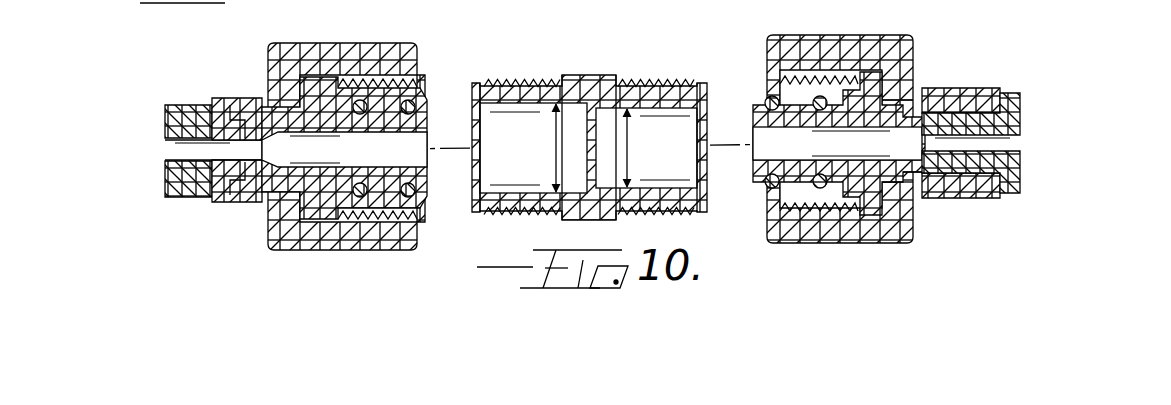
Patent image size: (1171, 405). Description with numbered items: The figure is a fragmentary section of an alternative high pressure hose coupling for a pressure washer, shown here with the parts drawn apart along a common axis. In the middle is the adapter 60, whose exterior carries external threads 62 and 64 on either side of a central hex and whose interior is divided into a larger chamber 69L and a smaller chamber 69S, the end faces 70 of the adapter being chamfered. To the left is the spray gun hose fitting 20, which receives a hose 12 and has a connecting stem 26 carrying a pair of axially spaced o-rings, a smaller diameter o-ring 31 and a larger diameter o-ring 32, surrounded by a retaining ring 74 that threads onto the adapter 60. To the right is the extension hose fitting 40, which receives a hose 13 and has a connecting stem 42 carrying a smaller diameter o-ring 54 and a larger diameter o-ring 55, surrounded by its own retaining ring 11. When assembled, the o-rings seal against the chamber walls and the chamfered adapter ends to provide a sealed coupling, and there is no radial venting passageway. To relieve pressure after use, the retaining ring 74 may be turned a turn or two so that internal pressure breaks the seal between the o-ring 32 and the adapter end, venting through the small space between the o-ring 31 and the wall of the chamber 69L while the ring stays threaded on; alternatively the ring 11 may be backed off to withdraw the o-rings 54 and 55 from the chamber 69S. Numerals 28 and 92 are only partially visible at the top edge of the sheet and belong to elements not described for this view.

The nut 11 is at (861, 42).
The tube 12 is at (165, 178).
The tube 13 is at (1022, 114).
The spray gun hose fitting 20 is at (277, 108).
The connecting stem 26 is at (295, 180).
The component (partially shown) 28 is at (365, 6).
The smaller diameter o-ring 31 is at (412, 197).
The larger diameter o-ring 32 is at (362, 197).
The extension hose fitting 40 is at (912, 96).
The connecting stem 42 is at (893, 185).
The smaller diameter o-ring 54 is at (768, 99).
The larger diameter o-ring 55 is at (820, 190).
The adapter 60 is at (593, 124).
The external thread 62 is at (526, 84).
The external thread 64 is at (686, 82).
The chamber 69L is at (556, 165).
The chamber 69S is at (620, 156).
The coupling end face 70 is at (470, 103).
The retaining ring 74 is at (300, 248).
The component (partially shown) 92 is at (441, 6).